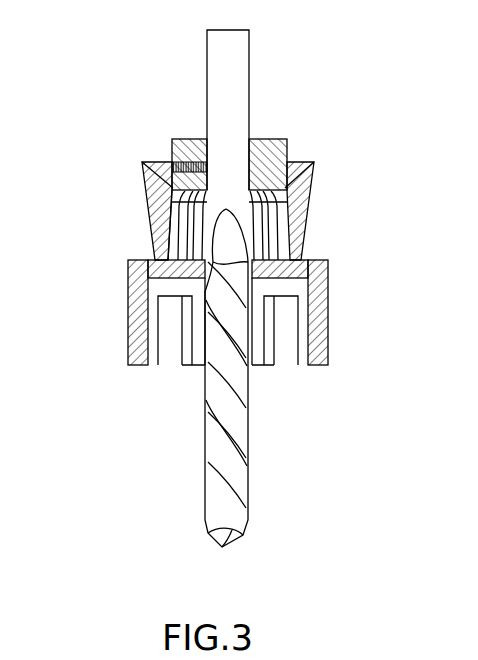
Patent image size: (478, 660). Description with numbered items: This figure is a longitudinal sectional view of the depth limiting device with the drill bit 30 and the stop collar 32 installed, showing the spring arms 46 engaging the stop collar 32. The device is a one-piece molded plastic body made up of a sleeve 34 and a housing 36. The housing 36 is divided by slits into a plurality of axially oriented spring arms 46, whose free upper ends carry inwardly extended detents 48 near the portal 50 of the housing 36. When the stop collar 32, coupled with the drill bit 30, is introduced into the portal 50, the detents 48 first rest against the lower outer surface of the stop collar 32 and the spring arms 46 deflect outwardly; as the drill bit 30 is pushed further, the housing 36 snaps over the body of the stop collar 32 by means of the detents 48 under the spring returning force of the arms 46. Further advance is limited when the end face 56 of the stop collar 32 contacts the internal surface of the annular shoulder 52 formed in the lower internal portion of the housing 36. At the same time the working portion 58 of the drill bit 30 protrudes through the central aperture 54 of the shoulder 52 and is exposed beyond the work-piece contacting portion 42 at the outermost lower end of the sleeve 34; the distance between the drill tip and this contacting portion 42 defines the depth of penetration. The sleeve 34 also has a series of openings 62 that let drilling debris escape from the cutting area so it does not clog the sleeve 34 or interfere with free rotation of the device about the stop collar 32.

The drill bit 30 is at (240, 50).
The stop collar 32 is at (285, 140).
The sleeve 34 is at (130, 288).
The housing 36 is at (155, 242).
The work-piece contacting portion 42 is at (322, 365).
The spring arms 46 is at (307, 208).
The detents 48 is at (143, 173).
The portal 50 is at (167, 163).
The annular shoulder 52 is at (155, 255).
The central aperture 54 is at (252, 263).
The end face 56 is at (273, 192).
The working portion 58 is at (247, 447).
The openings 62 is at (167, 333).